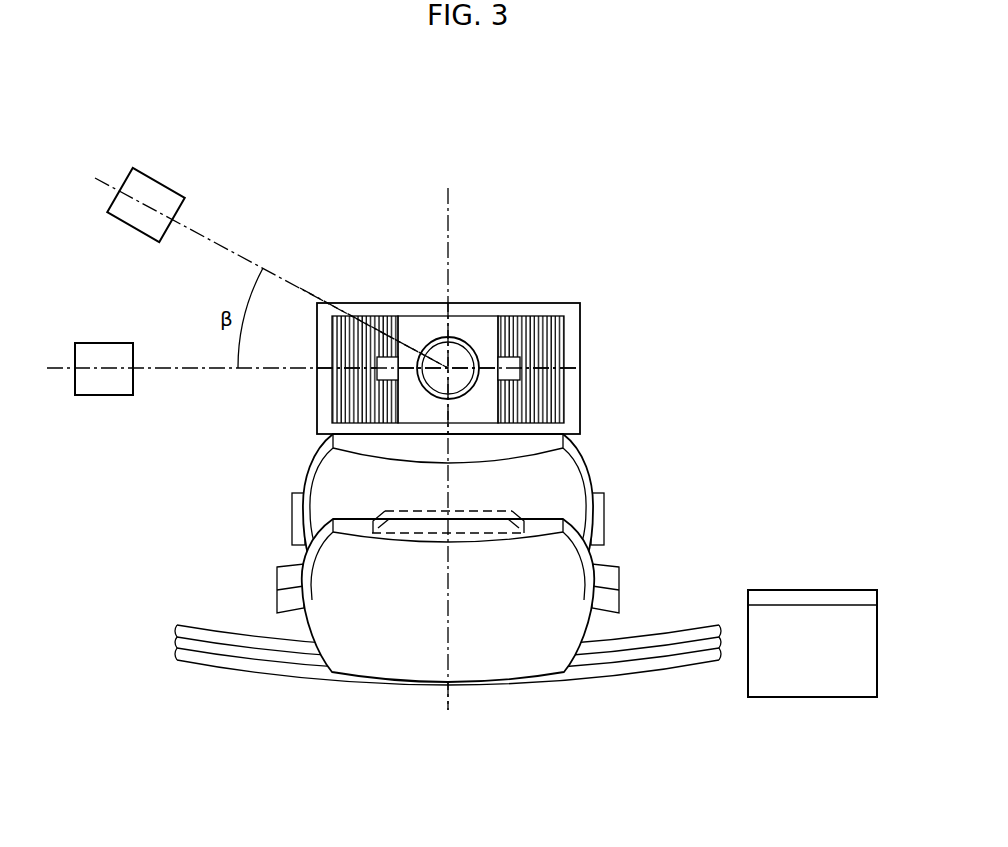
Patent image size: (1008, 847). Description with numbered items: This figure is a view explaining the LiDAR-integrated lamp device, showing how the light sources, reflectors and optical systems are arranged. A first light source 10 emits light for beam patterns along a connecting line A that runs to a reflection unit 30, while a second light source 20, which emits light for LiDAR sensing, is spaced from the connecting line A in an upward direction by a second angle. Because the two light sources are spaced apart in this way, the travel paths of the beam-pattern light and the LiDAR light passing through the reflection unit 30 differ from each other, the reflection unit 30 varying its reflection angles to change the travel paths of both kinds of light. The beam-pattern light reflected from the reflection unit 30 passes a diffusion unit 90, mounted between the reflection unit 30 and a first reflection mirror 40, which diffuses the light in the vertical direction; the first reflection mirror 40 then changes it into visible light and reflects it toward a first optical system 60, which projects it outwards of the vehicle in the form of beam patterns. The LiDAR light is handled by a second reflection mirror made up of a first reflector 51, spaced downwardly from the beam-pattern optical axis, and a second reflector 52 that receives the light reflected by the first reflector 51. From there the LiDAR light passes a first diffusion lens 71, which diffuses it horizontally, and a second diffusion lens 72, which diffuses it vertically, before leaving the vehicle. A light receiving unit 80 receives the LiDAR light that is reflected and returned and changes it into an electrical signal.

The first light source 10 is at (102, 397).
The second light source 20 is at (157, 190).
The reflection unit 30 is at (460, 355).
The first reflection mirror 40 is at (547, 330).
The first reflector 51 is at (413, 510).
The second reflector 52 is at (298, 513).
The first optical system 60 is at (577, 583).
The first diffusion lens 71 is at (282, 580).
The second diffusion lens 72 is at (240, 663).
The light receiving unit 80 is at (810, 693).
The diffusion unit 90 is at (513, 367).
The connecting line A is at (190, 370).